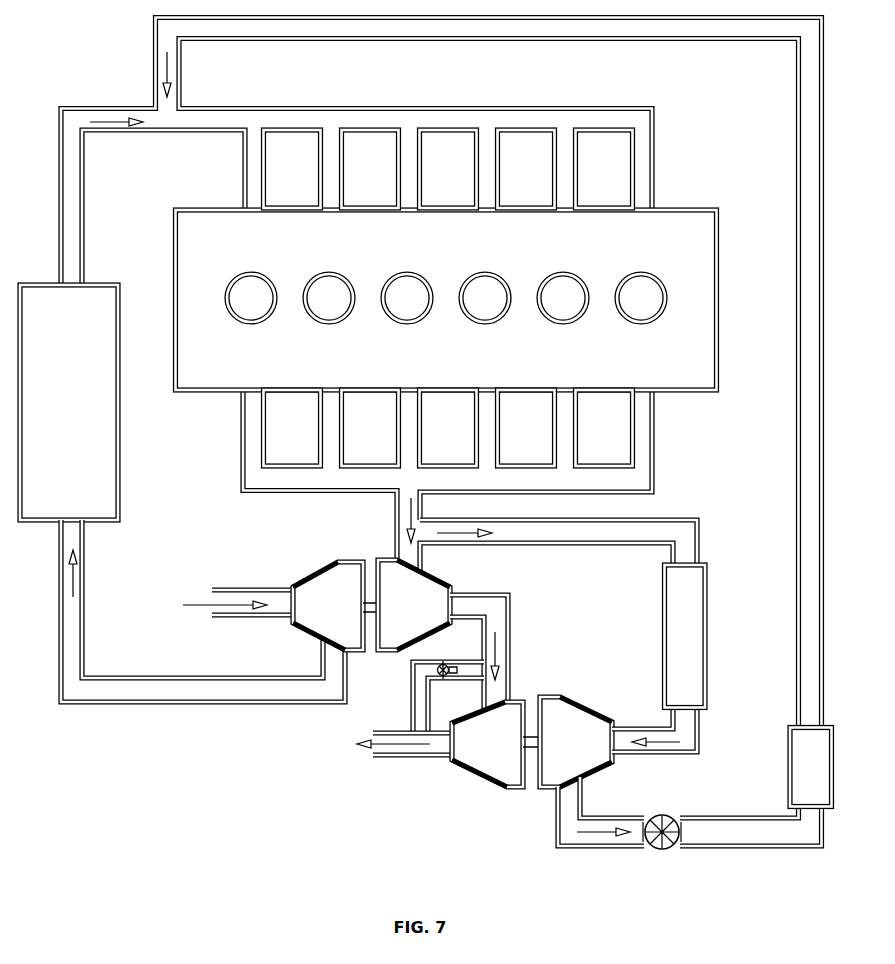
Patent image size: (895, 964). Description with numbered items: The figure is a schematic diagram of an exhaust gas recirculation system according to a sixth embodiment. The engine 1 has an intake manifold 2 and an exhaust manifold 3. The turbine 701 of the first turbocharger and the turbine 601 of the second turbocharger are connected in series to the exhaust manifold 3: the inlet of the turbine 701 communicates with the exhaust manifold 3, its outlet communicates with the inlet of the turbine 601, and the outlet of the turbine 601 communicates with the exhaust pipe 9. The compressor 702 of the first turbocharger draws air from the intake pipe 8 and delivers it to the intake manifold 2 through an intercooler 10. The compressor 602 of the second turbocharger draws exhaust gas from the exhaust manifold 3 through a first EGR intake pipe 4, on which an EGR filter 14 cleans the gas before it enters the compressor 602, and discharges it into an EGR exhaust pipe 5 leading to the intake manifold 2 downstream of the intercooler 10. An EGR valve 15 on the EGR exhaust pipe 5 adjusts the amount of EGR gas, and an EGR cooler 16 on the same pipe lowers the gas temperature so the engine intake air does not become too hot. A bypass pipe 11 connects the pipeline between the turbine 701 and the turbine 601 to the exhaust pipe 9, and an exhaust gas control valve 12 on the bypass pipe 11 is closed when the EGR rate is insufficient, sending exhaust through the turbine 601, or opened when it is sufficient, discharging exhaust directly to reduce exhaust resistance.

The engine 1 is at (446, 298).
The intake manifold 2 is at (473, 120).
The exhaust manifold 3 is at (643, 463).
The first EGR intake pipe 4 is at (683, 528).
The EGR exhaust pipe 5 is at (806, 360).
The intake pipe 8 is at (227, 600).
The exhaust pipe 9 is at (438, 753).
The intercooler 10 is at (69, 402).
The bypass pipe 11 is at (415, 677).
The exhaust gas control valve 12 is at (445, 676).
The EGR filter 14 is at (685, 636).
The EGR valve 15 is at (667, 820).
The EGR cooler 16 is at (811, 767).
The turbine of second turbocharger 601 is at (510, 725).
The compressor of second turbocharger 602 is at (582, 725).
The turbine of first turbocharger 701 is at (417, 585).
The compressor of first turbocharger 702 is at (338, 590).